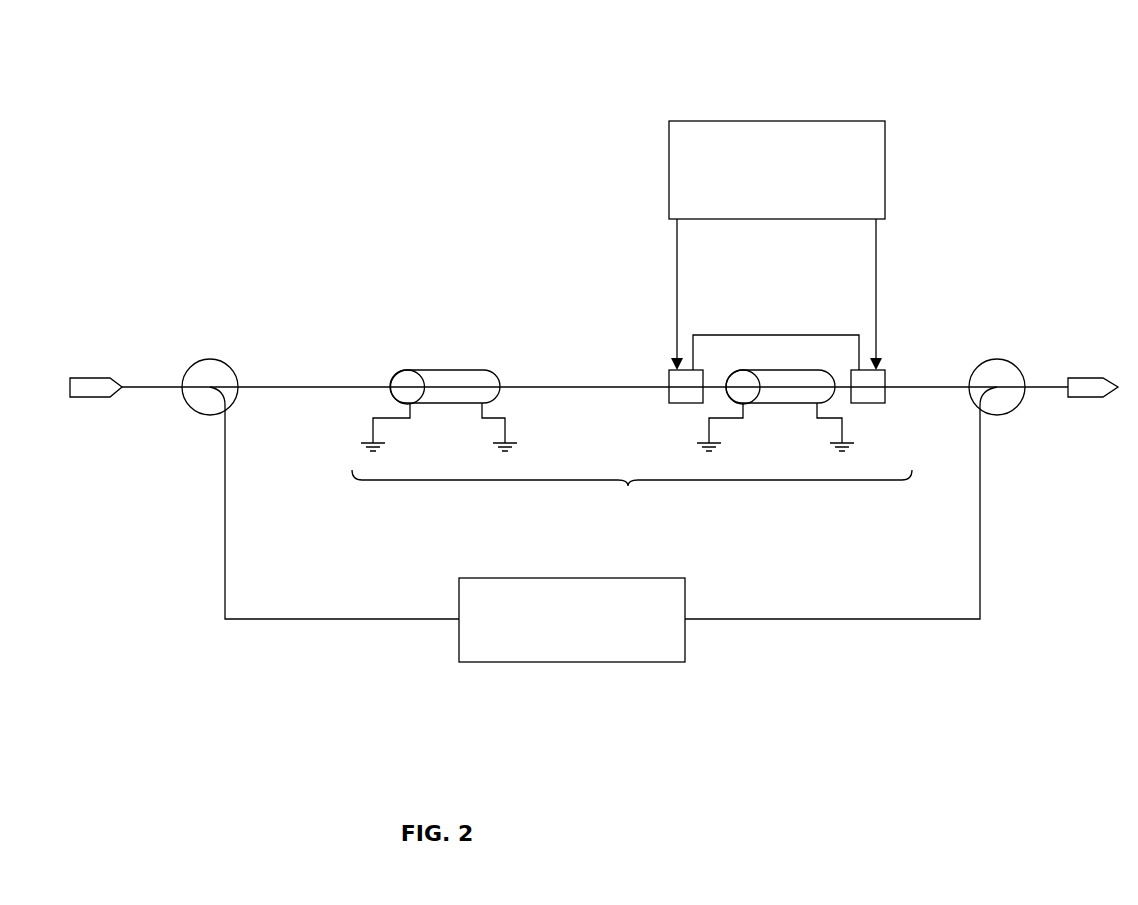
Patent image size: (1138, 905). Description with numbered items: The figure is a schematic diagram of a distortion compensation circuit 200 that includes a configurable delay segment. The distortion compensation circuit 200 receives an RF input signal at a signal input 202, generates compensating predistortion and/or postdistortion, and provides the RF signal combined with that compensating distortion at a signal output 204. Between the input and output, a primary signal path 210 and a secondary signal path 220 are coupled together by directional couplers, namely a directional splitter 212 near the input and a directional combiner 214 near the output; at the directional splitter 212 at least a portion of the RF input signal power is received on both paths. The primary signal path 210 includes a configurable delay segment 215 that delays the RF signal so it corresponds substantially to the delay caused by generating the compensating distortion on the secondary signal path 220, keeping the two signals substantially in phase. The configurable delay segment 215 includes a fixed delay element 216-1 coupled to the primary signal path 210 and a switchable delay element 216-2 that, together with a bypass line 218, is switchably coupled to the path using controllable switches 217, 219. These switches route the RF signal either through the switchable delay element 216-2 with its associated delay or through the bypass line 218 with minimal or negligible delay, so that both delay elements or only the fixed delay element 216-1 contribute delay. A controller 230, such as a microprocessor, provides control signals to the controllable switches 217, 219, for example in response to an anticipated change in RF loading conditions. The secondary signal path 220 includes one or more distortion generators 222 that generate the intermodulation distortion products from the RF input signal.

The distortion compensation circuit 200 is at (476, 110).
The signal input 202 is at (82, 377).
The signal output 204 is at (1081, 378).
The primary signal path 210 is at (277, 318).
The directional splitter 212 is at (194, 365).
The directional combiner 214 is at (977, 363).
The configurable delay segment 215 is at (632, 394).
The fixed delay element 216-1 is at (436, 403).
The switchable delay element 216-2 is at (773, 403).
The controllable switch 217 is at (672, 403).
The bypass line 218 is at (799, 335).
The controllable switch 219 is at (880, 403).
The secondary signal path 220 is at (294, 670).
The distortion generator 222 is at (566, 578).
The controller 230 is at (669, 153).